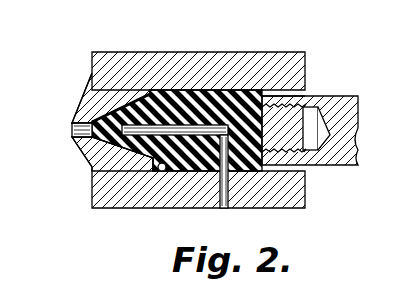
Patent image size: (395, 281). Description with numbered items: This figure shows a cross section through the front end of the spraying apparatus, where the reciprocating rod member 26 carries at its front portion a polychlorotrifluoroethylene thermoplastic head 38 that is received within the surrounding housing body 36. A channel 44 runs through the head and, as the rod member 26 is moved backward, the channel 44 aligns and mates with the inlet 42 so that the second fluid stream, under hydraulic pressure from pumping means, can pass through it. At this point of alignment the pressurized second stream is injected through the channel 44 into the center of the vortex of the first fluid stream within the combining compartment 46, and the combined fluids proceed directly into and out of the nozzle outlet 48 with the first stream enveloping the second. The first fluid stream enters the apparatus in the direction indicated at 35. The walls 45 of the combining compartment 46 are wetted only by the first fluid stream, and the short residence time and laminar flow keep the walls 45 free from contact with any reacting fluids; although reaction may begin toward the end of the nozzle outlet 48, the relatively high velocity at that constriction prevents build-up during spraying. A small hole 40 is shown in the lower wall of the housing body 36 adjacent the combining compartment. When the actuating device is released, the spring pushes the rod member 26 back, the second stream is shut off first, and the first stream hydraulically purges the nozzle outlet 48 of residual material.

The reciprocating rod member 26 is at (346, 108).
The inlet flow direction 35 is at (64, 109).
The housing body 36 is at (295, 195).
The thermoplastic head 38 is at (216, 100).
The vent hole 40 is at (161, 172).
The inlet 42 is at (229, 209).
The channel 44 is at (172, 128).
The walls 45 is at (112, 148).
The combining compartment 46 is at (115, 122).
The nozzle outlet 48 is at (82, 131).